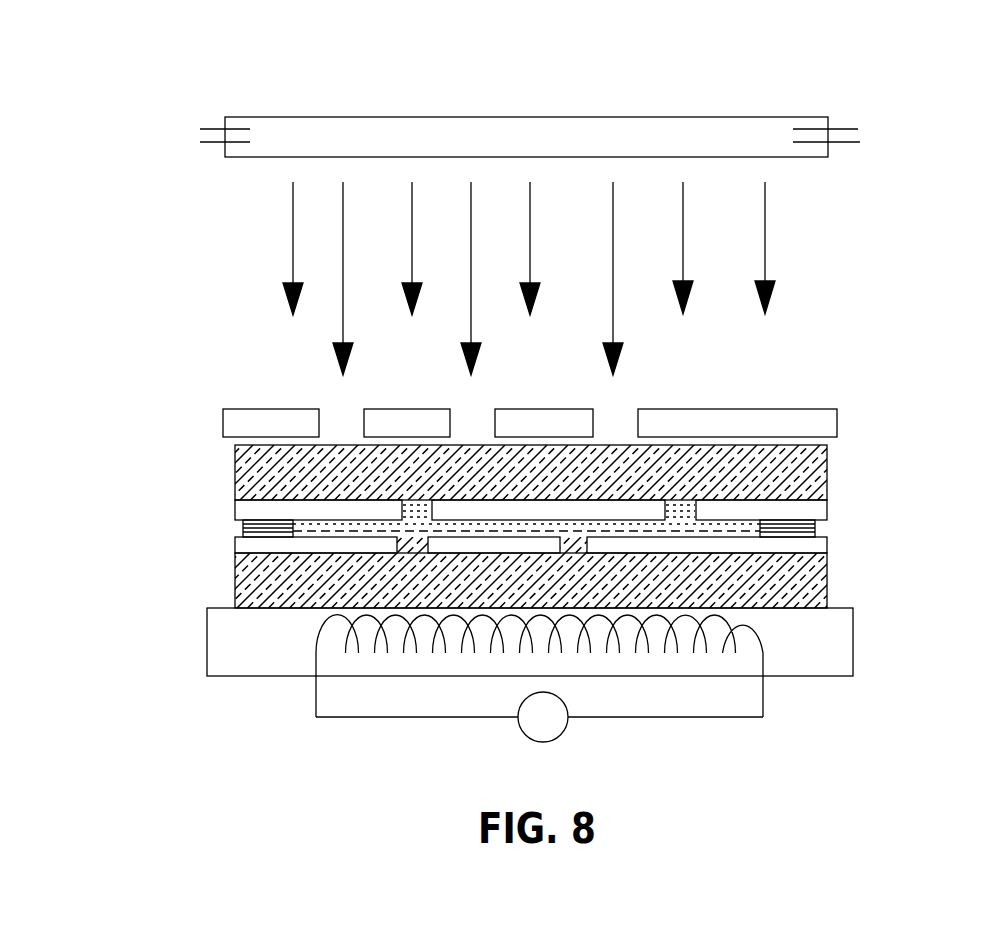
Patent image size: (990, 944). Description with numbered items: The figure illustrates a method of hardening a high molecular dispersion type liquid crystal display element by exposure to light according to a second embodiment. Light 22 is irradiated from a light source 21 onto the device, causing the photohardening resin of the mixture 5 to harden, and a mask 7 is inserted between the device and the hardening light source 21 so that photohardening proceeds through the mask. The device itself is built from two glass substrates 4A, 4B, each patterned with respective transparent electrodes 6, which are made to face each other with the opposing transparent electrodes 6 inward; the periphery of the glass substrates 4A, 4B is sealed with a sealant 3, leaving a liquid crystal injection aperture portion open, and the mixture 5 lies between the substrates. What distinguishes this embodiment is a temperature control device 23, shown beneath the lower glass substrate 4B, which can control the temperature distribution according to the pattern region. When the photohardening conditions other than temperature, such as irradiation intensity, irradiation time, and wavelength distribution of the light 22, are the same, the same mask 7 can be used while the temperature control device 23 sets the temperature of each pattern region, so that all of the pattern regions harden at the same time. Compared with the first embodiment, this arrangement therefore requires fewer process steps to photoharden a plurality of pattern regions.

The light source 21 is at (582, 117).
The light 22 is at (765, 250).
The mask 7 is at (817, 409).
The glass substrate 4A is at (755, 478).
The mixture 5 is at (560, 518).
The sealant 3 is at (815, 527).
The transparent electrodes 6 is at (235, 537).
The glass substrate 4B is at (795, 583).
The temperature control device 23 is at (803, 653).